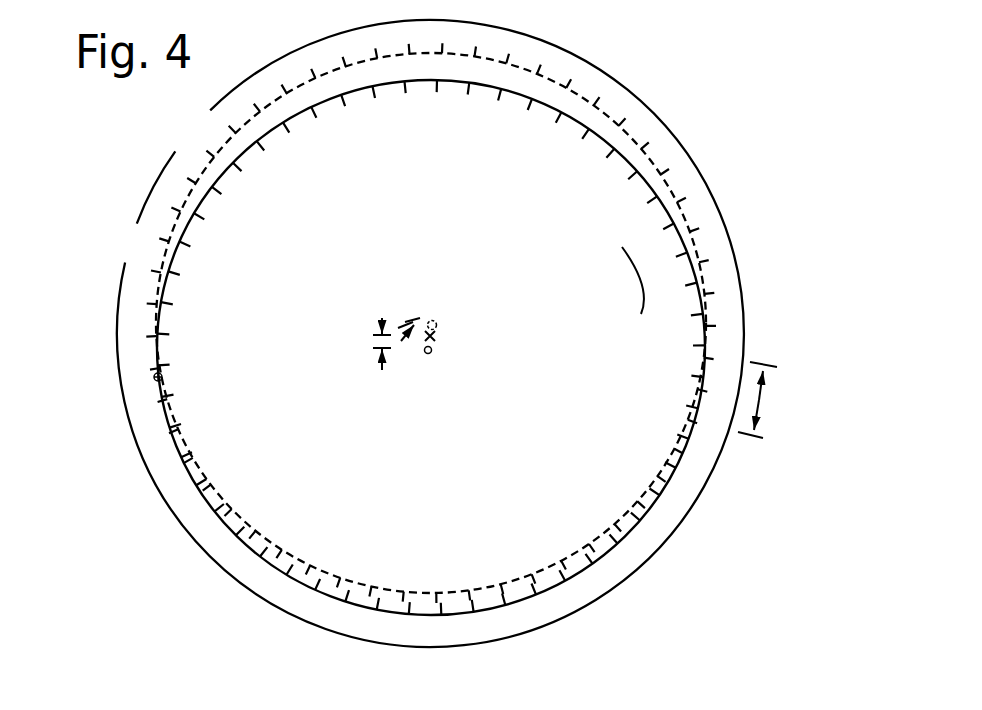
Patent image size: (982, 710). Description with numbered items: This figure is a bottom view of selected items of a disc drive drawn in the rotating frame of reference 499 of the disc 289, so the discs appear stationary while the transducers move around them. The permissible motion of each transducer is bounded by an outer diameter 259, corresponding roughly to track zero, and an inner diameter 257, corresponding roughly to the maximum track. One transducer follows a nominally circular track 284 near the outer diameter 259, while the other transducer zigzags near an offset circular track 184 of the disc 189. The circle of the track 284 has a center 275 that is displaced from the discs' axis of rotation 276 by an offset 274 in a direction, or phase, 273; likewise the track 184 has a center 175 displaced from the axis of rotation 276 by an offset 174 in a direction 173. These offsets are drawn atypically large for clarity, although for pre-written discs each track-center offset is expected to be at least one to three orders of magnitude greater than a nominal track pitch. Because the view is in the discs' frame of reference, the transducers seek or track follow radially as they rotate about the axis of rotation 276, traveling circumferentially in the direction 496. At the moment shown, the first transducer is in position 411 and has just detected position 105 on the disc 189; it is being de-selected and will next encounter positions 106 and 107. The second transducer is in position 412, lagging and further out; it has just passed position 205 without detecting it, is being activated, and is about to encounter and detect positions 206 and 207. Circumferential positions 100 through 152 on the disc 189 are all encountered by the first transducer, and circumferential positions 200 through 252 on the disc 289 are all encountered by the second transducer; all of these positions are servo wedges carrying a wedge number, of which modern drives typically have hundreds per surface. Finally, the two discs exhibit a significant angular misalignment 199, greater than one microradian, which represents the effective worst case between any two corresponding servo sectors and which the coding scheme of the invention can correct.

The circumferential position 100 is at (175, 219).
The position 105 is at (169, 371).
The position 106 is at (184, 398).
The position 107 is at (194, 431).
The circumferential position 152 is at (196, 181).
The direction (phase) 173 is at (445, 298).
The offset 174 is at (422, 292).
The center 175 is at (446, 323).
The offset circular track 184 is at (370, 585).
The disc 189 is at (732, 104).
The angular misalignment 199 is at (773, 400).
The circumferential position 200 is at (196, 221).
The position 205 is at (152, 361).
The position 206 is at (154, 398).
The position 207 is at (164, 432).
The circumferential position 252 is at (219, 186).
The inner diameter 257 is at (646, 307).
The outer diameter 259 is at (741, 298).
The direction (phase) 273 is at (428, 372).
The offset 274 is at (363, 352).
The center 275 is at (437, 352).
The axis of rotation 276 is at (438, 337).
The circular track 284 is at (330, 598).
The disc 289 is at (705, 61).
The position 411 is at (167, 377).
The position 412 is at (154, 377).
The direction 496 is at (722, 537).
The rotating frame of reference 499 is at (430, 333).